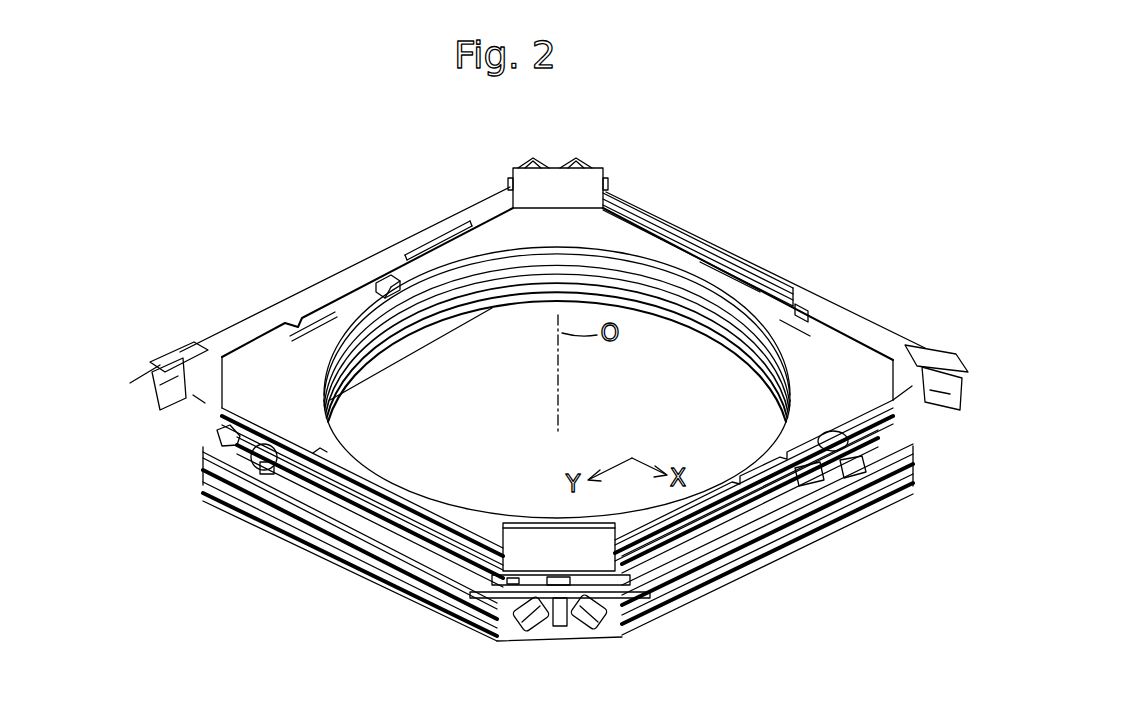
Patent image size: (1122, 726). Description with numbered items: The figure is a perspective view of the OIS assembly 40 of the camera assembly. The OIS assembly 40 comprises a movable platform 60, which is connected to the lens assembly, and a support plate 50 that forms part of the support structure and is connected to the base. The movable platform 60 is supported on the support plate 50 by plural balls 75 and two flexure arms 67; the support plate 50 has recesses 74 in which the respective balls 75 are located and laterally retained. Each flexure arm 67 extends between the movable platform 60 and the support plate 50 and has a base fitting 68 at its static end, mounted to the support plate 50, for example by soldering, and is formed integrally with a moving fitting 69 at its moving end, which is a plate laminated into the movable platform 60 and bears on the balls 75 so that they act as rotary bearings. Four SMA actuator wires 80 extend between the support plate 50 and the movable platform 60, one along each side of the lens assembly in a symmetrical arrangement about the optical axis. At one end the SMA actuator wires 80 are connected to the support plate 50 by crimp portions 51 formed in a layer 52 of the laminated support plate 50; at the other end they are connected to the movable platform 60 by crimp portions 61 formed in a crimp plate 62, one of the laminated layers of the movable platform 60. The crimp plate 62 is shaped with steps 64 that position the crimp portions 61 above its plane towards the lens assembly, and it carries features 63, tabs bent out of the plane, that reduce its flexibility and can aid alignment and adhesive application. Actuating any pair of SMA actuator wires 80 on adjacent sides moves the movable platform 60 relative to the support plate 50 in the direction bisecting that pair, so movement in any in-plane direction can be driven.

The OIS assembly 40 is at (203, 312).
The support plate 50 is at (128, 390).
The crimp portions 51 is at (528, 162).
The layer 52 is at (672, 605).
The movable platform 60 is at (195, 472).
The crimp portions 61 is at (175, 352).
The crimp plate 62 is at (223, 393).
The features 63 is at (598, 183).
The steps 64 is at (198, 412).
The flexure arms 67 is at (733, 272).
The base fitting 68 is at (812, 484).
The moving fitting 69 is at (793, 330).
The recesses 74 is at (258, 462).
The balls 75 is at (273, 468).
The SMA actuator wires 80 is at (357, 262).